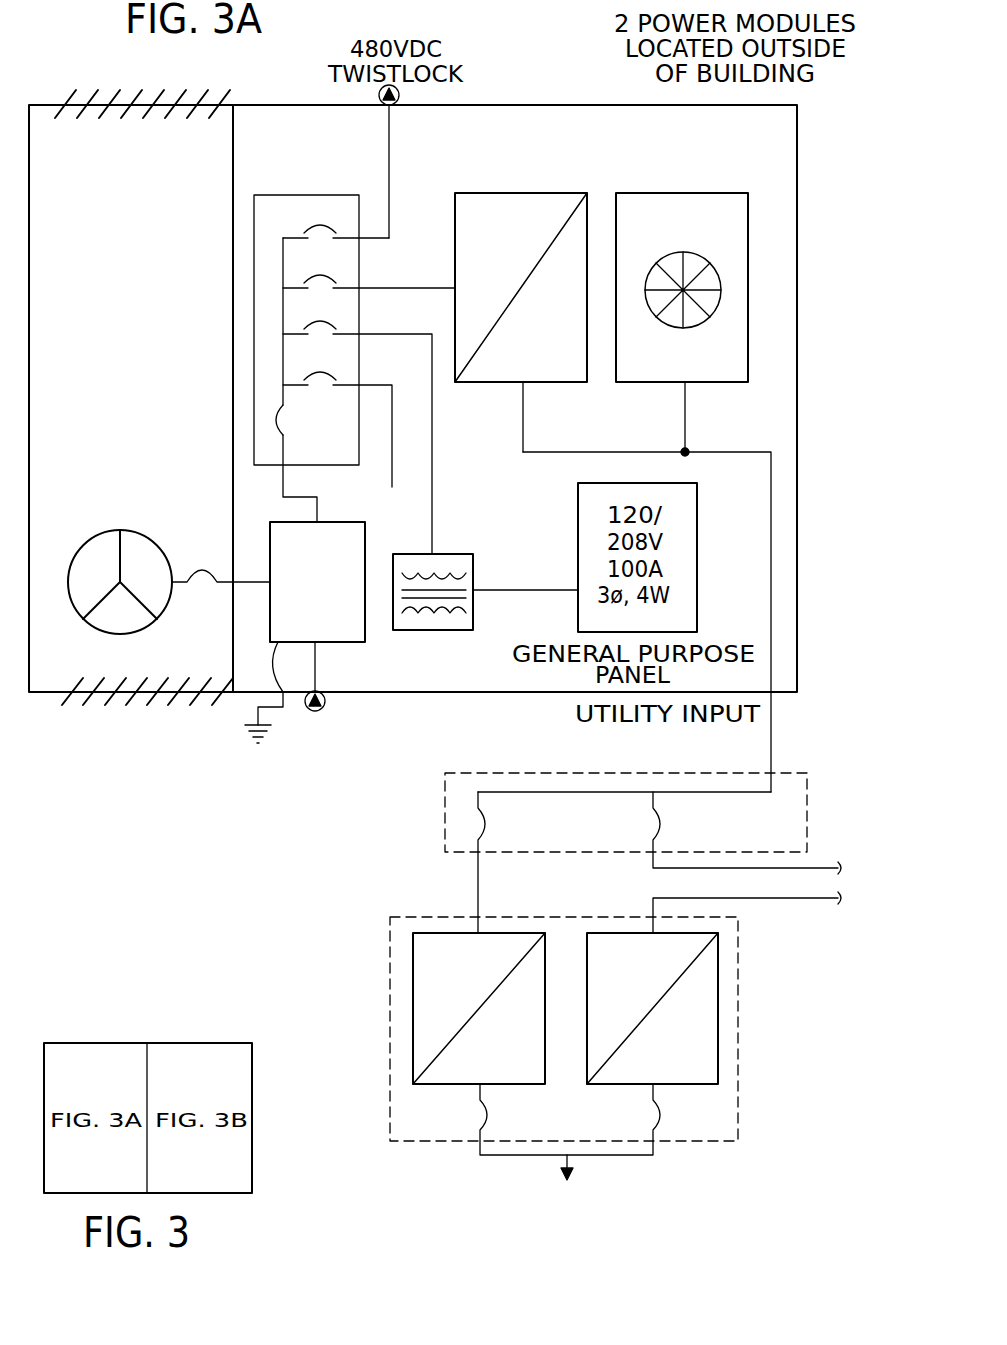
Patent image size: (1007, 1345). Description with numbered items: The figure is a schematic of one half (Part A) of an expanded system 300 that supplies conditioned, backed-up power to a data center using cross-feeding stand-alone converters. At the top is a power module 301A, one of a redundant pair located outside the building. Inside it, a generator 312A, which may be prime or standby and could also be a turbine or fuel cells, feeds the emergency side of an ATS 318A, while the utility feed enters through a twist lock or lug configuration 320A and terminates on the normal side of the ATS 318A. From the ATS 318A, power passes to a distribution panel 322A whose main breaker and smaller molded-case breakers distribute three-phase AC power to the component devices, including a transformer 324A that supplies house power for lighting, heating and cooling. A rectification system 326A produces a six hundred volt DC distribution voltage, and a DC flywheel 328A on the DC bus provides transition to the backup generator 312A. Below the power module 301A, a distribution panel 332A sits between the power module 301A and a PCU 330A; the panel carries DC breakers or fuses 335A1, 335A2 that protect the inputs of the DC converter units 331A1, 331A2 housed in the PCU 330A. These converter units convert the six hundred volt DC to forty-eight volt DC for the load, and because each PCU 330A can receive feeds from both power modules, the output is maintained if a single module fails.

The expanded system 300 is at (216, 762).
The power module 301A is at (518, 106).
The generator 312A is at (160, 284).
The ATS 318A is at (345, 618).
The twist lock or lug configuration 320A is at (316, 712).
The distribution panel 322A is at (260, 210).
The transformer 324A is at (446, 556).
The rectification system 326A is at (562, 202).
The DC flywheel 328A is at (692, 193).
The PCU 330A is at (537, 1041).
The DC converter unit 331A1 is at (450, 948).
The DC converter unit 331A2 is at (703, 963).
The distribution panel 332A is at (598, 826).
The DC breaker or fuse 335A1 is at (485, 812).
The DC breaker or fuse 335A2 is at (655, 812).